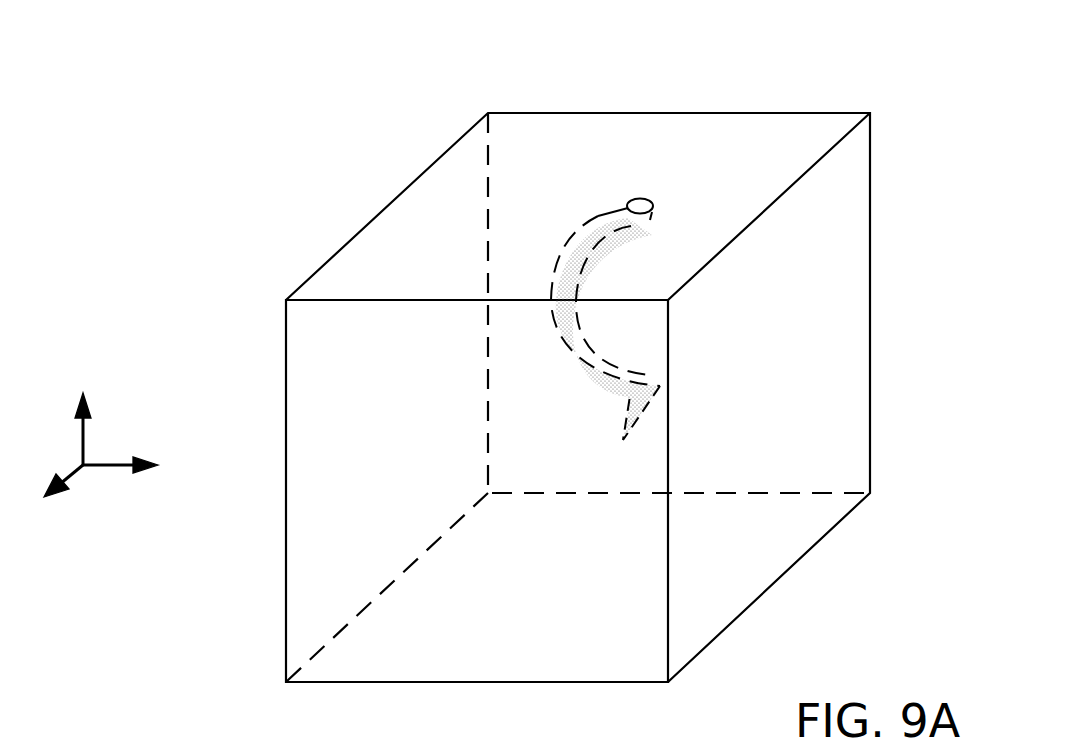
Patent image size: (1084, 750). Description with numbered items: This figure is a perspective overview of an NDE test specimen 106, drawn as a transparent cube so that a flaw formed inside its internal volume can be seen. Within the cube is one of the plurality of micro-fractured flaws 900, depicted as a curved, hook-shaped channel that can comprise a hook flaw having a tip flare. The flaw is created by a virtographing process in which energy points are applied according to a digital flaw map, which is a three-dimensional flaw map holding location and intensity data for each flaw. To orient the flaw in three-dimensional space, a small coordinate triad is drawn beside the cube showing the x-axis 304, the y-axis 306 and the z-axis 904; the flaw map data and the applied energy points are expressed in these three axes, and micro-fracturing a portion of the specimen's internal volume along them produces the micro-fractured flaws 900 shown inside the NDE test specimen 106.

The NDE test specimen 106 is at (582, 80).
The plurality of micro-fractured flaws 900 is at (600, 215).
The z-axis 904 is at (88, 420).
The x-axis 304 is at (120, 470).
The y-axis 306 is at (66, 490).